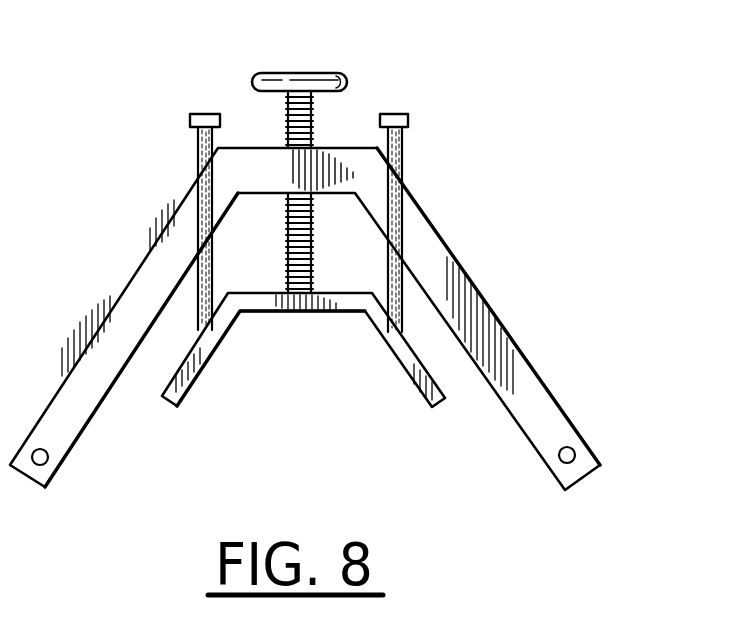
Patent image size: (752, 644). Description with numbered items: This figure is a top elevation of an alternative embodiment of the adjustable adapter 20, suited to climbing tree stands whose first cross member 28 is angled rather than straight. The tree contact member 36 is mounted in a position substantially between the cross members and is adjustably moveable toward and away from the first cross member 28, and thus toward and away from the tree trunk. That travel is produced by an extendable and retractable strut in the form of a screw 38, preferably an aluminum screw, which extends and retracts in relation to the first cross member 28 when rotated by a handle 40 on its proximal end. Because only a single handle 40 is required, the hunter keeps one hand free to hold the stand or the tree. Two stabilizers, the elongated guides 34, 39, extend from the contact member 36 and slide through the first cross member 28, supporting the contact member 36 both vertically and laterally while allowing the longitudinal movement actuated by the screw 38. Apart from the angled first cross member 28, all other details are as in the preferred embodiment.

The adjustable adapter 20 is at (317, 319).
The first cross member 28 is at (432, 228).
The elongated guide 34 is at (200, 152).
The tree contact member 36 is at (197, 377).
The screw 38 is at (311, 124).
The elongated guide 39 is at (402, 156).
The handle 40 is at (321, 74).